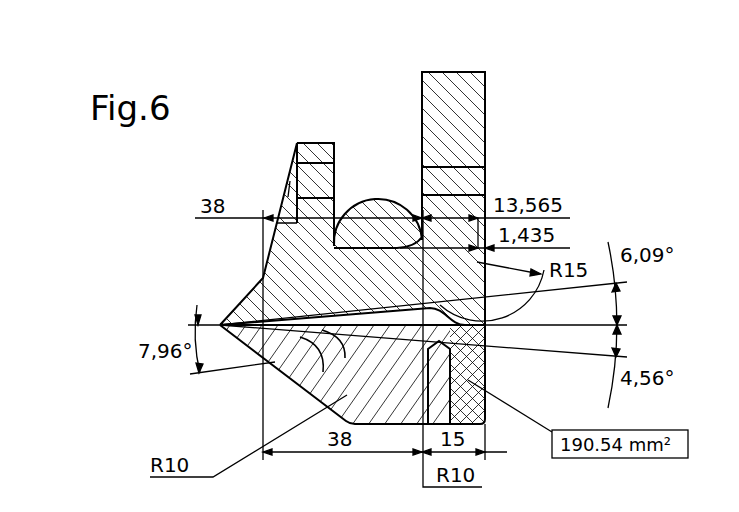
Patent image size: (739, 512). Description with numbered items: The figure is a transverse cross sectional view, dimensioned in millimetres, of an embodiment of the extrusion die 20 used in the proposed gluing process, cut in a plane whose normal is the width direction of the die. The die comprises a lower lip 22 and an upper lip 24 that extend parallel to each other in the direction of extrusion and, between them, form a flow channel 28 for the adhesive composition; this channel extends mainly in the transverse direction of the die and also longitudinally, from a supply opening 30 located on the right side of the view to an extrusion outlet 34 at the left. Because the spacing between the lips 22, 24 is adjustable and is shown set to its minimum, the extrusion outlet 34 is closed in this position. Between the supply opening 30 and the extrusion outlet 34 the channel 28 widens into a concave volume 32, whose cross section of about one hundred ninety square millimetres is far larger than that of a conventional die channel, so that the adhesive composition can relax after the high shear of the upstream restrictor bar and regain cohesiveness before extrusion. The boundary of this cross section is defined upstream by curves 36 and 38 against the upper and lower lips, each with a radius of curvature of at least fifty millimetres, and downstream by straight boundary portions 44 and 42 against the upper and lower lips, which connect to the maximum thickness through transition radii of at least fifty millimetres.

The extrusion die 20 is at (115, 229).
The lower lip 22 is at (367, 373).
The upper lip 24 is at (320, 300).
The flow channel 28 is at (412, 73).
The supply opening 30 is at (480, 318).
The concave volume 32 is at (412, 317).
The extrusion outlet 34 is at (221, 322).
The upstream boundary curve with the upper lip 36 is at (484, 332).
The upstream boundary curve with the lower lip 38 is at (452, 343).
The downstream boundary curve with the lower lip 42 is at (330, 340).
The downstream boundary curve with the upper lip 44 is at (300, 352).